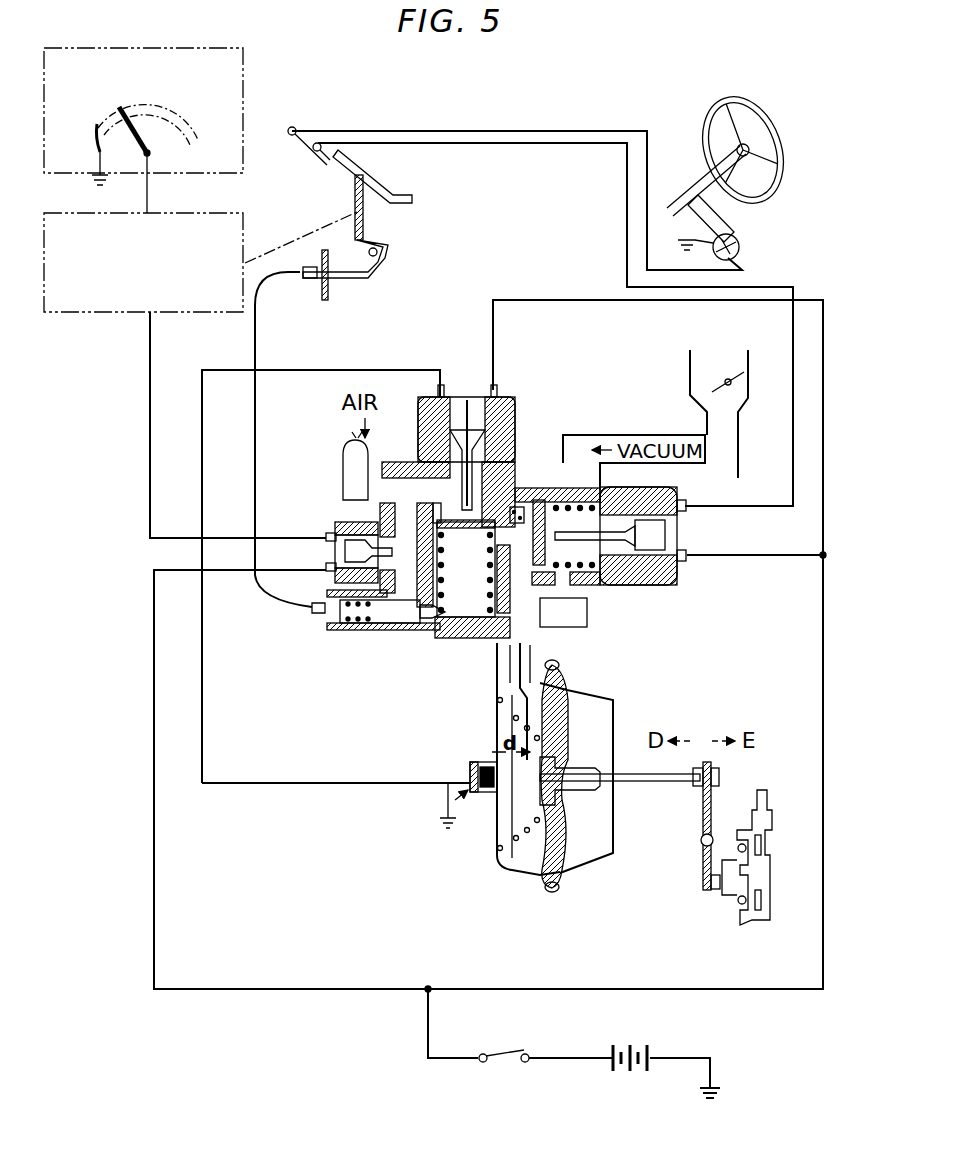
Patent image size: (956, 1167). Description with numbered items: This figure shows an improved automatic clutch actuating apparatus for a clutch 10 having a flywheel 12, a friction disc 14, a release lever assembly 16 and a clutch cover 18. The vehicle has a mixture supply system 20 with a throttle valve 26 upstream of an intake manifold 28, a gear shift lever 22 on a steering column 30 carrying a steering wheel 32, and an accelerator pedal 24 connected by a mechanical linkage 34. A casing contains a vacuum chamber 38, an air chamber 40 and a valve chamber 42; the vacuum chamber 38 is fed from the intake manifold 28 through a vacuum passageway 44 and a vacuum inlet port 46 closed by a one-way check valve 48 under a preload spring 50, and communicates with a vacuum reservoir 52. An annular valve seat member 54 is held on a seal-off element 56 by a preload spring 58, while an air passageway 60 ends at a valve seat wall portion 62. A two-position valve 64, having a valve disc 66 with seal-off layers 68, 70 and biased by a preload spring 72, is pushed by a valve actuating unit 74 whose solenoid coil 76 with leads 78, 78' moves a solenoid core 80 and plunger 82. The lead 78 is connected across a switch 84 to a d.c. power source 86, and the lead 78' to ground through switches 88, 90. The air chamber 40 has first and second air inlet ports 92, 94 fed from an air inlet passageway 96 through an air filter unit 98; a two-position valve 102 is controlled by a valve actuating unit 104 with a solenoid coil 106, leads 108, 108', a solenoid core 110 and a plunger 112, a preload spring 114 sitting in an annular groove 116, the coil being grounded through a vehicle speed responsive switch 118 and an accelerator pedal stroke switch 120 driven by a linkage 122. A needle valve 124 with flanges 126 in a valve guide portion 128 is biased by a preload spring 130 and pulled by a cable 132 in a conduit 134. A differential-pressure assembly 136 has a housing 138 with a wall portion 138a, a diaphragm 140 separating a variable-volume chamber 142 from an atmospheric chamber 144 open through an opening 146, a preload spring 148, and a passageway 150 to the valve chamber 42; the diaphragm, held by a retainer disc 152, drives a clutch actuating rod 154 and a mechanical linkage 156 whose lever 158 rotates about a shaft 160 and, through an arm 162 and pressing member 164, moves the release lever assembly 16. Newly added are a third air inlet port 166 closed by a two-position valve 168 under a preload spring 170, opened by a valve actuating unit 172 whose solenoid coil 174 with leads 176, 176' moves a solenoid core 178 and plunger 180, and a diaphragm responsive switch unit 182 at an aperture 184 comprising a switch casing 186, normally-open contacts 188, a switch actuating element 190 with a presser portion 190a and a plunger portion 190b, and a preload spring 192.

The clutch 10 is at (763, 796).
The flywheel 12 is at (766, 822).
The friction disc 14 is at (762, 845).
The release lever assembly 16 is at (740, 905).
The clutch cover 18 is at (745, 922).
The air-fuel mixture supply system 20 is at (690, 350).
The transmission gear shift lever 22 is at (745, 214).
The accelerator pedal 24 is at (390, 186).
The throttle valve 26 is at (748, 350).
The intake manifold 28 is at (740, 468).
The steering column 30 is at (684, 198).
The steering wheel 32 is at (708, 122).
The mechanical linkage 34 is at (366, 228).
The vacuum chamber 38 is at (602, 592).
The air chamber 40 is at (476, 597).
The valve chamber 42 is at (497, 700).
The vacuum passageway 44 is at (656, 436).
The vacuum inlet port 46 is at (620, 496).
The one-way check valve 48 is at (582, 438).
The preload spring 50 is at (551, 520).
The vacuum reservoir 52 is at (548, 625).
The annular valve seat member 54 is at (595, 527).
The resilient seal-off element 56 is at (544, 505).
The preload spring 58 is at (586, 586).
The air passageway 60 is at (506, 645).
The valve seat wall portion 62 is at (536, 500).
The two-position valve 64 is at (538, 510).
The rigid valve disc 66 is at (564, 712).
The seal-off layer 68 is at (690, 502).
The seal-off layer 70 is at (547, 500).
The preload spring 72 is at (519, 507).
The solenoid operated valve actuating unit 74 is at (672, 590).
The solenoid coil 76 is at (677, 582).
The input terminal lead 78 is at (708, 570).
The output terminal lead 78' is at (716, 529).
The solenoid core 80 is at (638, 552).
The plunger 82 is at (612, 566).
The switch 84 is at (505, 1056).
The d.c. power source 86 is at (630, 1044).
The gear shift lever responsive switch 88 is at (742, 247).
The accelerator pedal responsive switch 90 is at (290, 136).
The first restricted-flow air inlet port 92 is at (465, 563).
The second restricted-flow air inlet port 94 is at (421, 636).
The air inlet passageway 96 is at (381, 500).
The air filter unit 98 is at (346, 455).
The two-position valve 102 is at (382, 510).
The solenoid-operated valve actuating unit 104 is at (380, 530).
The solenoid coil 106 is at (336, 526).
The input terminal lead 108 is at (331, 567).
The output terminal lead 108' is at (270, 546).
The solenoid core 110 is at (326, 571).
The plunger 112 is at (380, 520).
The preload spring 114 is at (420, 413).
The annular groove 116 is at (421, 524).
The vehicle speed responsive switch 118 is at (243, 82).
The accelerator pedal stroke switch 120 is at (152, 318).
The mechanical linkage 122 is at (305, 236).
The needle valve 124 is at (406, 630).
The flanges 126 is at (381, 626).
The valve guide portion 128 is at (330, 626).
The preload spring 130 is at (346, 626).
The cable 132 is at (254, 400).
The conduit 134 is at (312, 282).
The differential-pressure assembly 136 is at (470, 712).
The hollow housing 138 is at (616, 700).
The wall portion 138a is at (512, 862).
The flexible diaphragm 140 is at (588, 690).
The variable-volume chamber 142 is at (555, 892).
The atmospheric chamber 144 is at (598, 866).
The opening 146 is at (606, 782).
The preload spring 148 is at (508, 872).
The passageway 150 is at (536, 666).
The retainer disc 152 is at (560, 792).
The clutch actuating rod 154 is at (641, 775).
The mechanical linkage 156 is at (708, 882).
The lever 158 is at (711, 790).
The shaft 160 is at (701, 840).
The lever arm 162 is at (703, 800).
The pressing member 164 is at (712, 890).
The third air inlet port 166 is at (458, 400).
The two-position valve 168 is at (513, 430).
The preload spring 170 is at (436, 640).
The solenoid operated valve actuating unit 172 is at (463, 400).
The solenoid coil 174 is at (497, 385).
The input terminal lead 176 is at (518, 318).
The output terminal lead 176' is at (404, 357).
The solenoid core 178 is at (484, 400).
The plunger 180 is at (503, 420).
The diaphragm responsive switch unit 182 is at (472, 797).
The aperture 184 is at (492, 810).
The switch casing 186 is at (470, 776).
The normally-open contacts 188 is at (478, 786).
The switch actuating element 190 is at (500, 706).
The presser portion 190a is at (498, 802).
The plunger portion 190b is at (500, 852).
The preload spring 192 is at (470, 768).